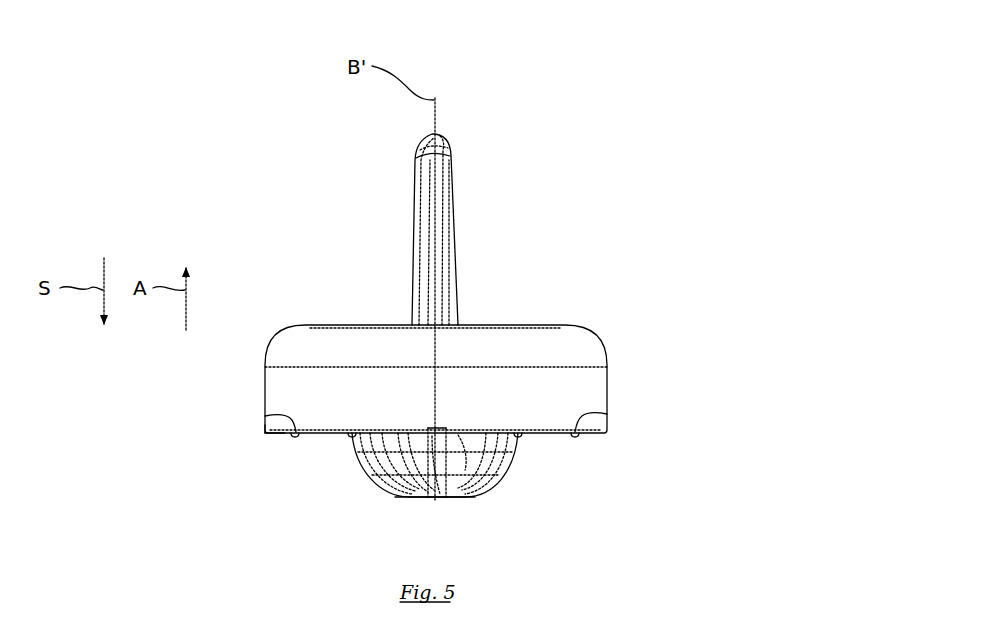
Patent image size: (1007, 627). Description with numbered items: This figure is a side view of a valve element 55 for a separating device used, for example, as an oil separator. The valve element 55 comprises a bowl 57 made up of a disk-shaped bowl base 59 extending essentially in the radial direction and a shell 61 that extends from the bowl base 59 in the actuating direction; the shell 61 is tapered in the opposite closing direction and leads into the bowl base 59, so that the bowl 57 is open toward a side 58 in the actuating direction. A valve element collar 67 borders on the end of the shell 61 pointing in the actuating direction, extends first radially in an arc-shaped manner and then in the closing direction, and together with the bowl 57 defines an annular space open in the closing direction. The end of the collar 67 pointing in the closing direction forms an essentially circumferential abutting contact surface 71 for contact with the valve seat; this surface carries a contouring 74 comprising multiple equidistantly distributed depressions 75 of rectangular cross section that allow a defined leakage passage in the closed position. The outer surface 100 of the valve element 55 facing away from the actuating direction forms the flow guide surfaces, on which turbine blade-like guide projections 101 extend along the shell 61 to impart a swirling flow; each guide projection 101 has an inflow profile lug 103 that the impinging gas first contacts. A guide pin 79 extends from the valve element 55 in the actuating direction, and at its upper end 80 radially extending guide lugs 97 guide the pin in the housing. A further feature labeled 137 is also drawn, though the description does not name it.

The valve element 55 is at (616, 200).
The side 58 is at (519, 321).
The valve element collar 67 is at (593, 357).
The abutting contact surface 71 is at (590, 437).
The contouring 74 is at (279, 438).
The depressions 75 is at (351, 430).
The guide pin 79 is at (413, 157).
The guide lug 97 is at (438, 167).
The upper end 80 is at (440, 135).
The bowl 57 is at (590, 484).
The outer surface 100 is at (506, 483).
The bowl base 59 is at (463, 500).
The central post 137 is at (462, 468).
The inflow profile lug 103 is at (425, 478).
The turbine blade-like guide projection 101 is at (395, 453).
The shell 61 is at (378, 436).